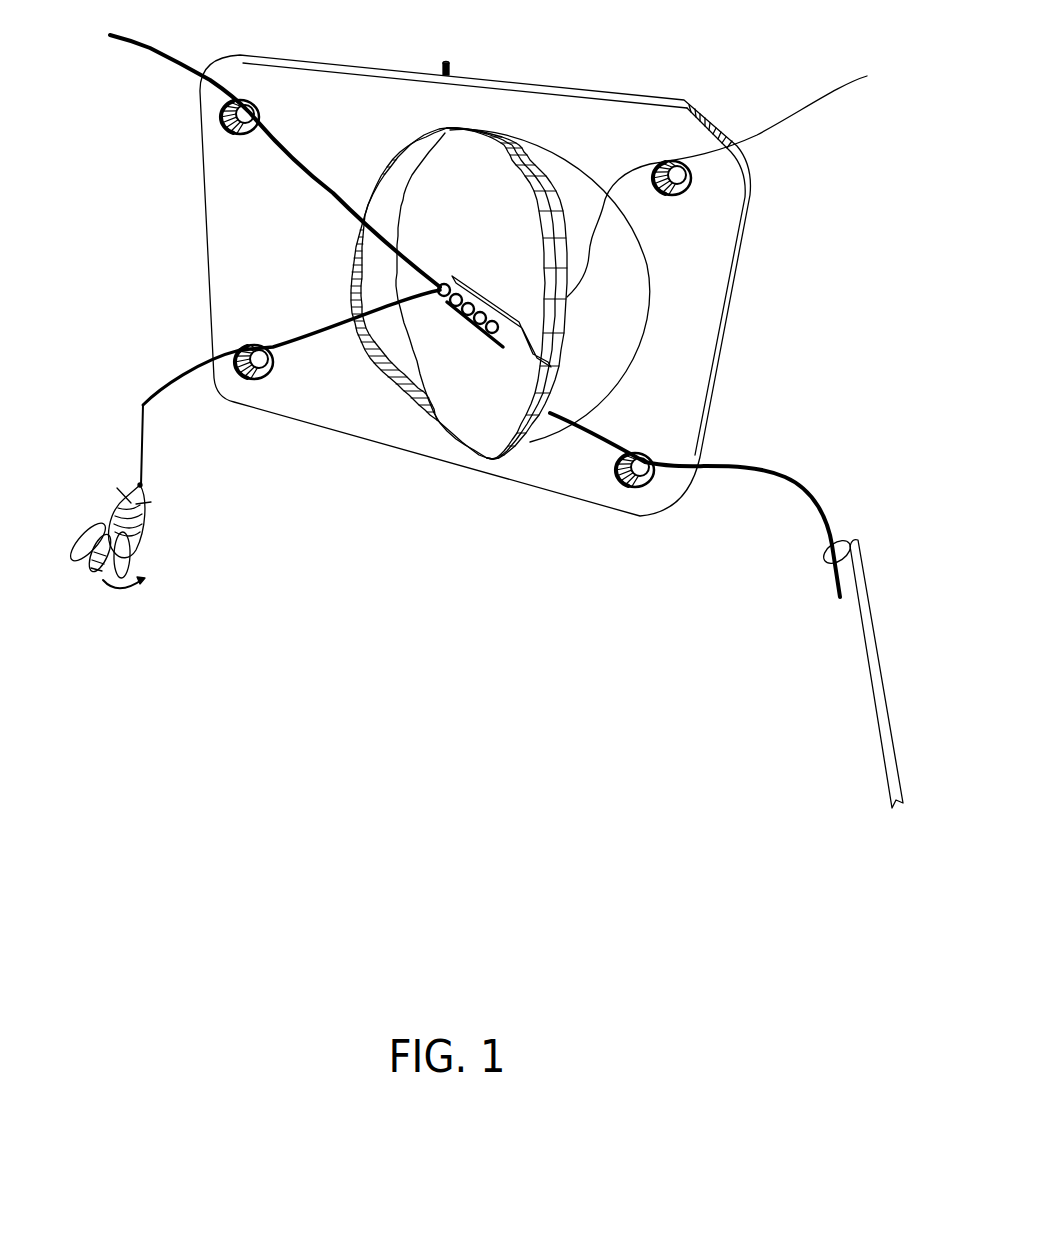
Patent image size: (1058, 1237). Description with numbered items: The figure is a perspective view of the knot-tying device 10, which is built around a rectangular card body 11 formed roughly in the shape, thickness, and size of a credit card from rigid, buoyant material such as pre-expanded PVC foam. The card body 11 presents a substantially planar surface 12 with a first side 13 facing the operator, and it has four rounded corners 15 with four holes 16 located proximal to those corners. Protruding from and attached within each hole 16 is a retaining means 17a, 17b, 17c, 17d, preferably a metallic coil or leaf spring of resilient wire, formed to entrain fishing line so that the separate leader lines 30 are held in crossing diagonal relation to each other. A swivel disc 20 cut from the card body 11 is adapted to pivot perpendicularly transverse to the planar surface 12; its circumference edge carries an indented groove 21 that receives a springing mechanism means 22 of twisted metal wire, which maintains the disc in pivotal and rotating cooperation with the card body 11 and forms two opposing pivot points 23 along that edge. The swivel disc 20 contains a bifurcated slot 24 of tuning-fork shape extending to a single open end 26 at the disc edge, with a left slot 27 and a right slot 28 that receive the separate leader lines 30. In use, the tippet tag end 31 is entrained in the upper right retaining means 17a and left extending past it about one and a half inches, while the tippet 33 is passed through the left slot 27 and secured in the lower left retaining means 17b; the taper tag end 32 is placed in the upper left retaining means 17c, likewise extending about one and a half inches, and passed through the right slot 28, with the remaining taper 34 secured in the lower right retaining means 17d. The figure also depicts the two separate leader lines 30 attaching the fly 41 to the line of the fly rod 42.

The knot-tying device 10 is at (614, 80).
The rectangular card body 11 is at (342, 65).
The planar surface 12 is at (352, 111).
The first side 13 is at (513, 97).
The rounded corners 15 is at (232, 54).
The holes 16 is at (478, 285).
The retaining means 17a is at (676, 198).
The retaining means 17b is at (266, 380).
The retaining means 17c is at (236, 136).
The retaining means 17d is at (618, 487).
The swivel disc 20 is at (476, 201).
The indented groove 21 is at (357, 140).
The springing mechanism means 22 is at (450, 64).
The opposing pivot points 23 is at (442, 134).
The bifurcated slot 24 is at (482, 282).
The single open end 26 is at (572, 356).
The left slot 27 is at (448, 278).
The right slot 28 is at (490, 332).
The separate leader lines 30 is at (333, 196).
The tippet tag end 31 is at (848, 78).
The taper tag end 32 is at (165, 63).
The tippet 33 is at (170, 374).
The taper 34 is at (780, 468).
The fly 41 is at (142, 530).
The fly rod 42 is at (867, 658).